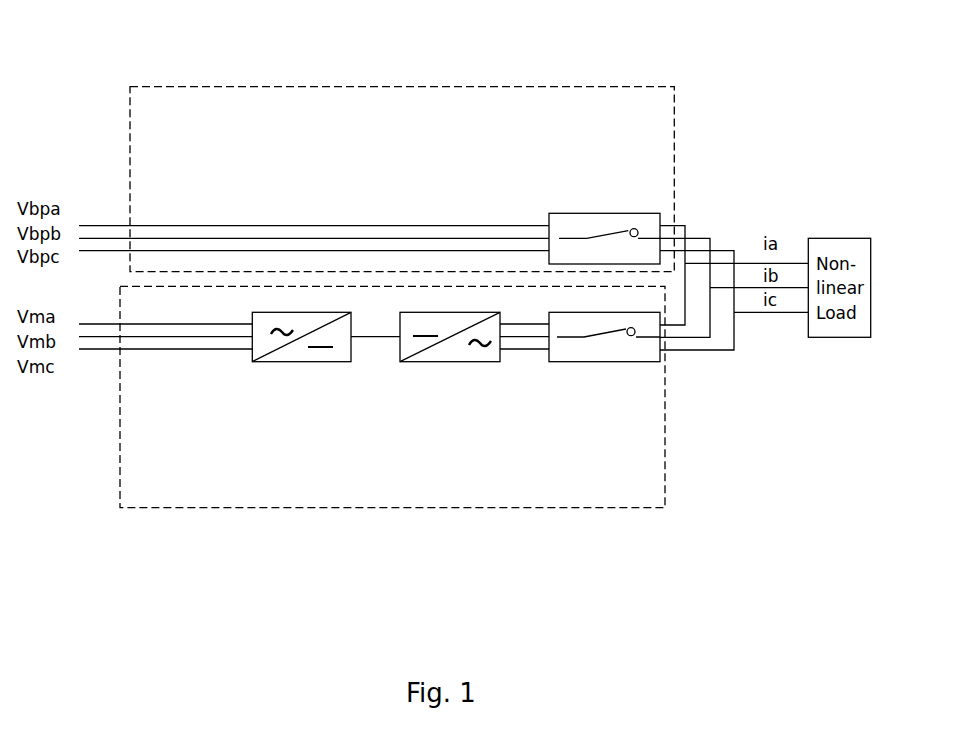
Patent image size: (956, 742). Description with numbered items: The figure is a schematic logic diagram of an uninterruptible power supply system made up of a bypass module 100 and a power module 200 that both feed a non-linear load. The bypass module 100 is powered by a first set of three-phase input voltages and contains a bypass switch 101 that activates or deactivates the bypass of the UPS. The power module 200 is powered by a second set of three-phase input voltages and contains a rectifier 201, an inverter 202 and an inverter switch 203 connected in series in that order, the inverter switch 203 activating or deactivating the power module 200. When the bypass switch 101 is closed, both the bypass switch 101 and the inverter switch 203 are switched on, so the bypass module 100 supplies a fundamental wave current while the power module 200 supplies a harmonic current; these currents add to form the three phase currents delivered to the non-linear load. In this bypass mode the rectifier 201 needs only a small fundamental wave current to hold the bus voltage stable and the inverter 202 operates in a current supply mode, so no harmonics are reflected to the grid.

The bypass module 100 is at (193, 96).
The bypass switch 101 is at (565, 222).
The power module 200 is at (225, 498).
The rectifier 201 is at (277, 359).
The inverter 202 is at (425, 359).
The inverter switch 203 is at (553, 358).